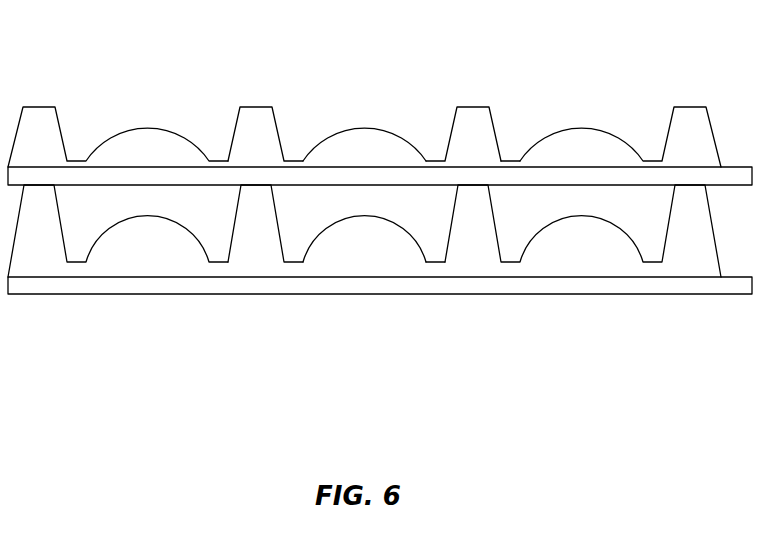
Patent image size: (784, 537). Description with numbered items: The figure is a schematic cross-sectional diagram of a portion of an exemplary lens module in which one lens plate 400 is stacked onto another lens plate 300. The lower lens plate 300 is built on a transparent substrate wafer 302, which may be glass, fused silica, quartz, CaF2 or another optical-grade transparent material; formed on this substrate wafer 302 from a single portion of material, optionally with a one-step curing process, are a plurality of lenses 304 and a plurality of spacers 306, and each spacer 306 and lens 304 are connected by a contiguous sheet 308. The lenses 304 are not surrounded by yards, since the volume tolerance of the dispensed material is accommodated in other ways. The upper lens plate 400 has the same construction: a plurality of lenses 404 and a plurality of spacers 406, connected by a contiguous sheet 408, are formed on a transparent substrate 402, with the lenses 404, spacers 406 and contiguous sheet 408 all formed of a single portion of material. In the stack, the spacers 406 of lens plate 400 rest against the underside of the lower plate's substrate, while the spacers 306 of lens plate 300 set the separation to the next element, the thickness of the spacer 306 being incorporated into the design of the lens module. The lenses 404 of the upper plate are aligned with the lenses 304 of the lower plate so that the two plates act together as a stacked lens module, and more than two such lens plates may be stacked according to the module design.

The lens plate 300 is at (380, 291).
The transparent substrate wafer 302 is at (610, 285).
The lens 304 is at (368, 254).
The spacer 306 is at (255, 245).
The contiguous sheet 308 is at (443, 280).
The lens plate 400 is at (383, 104).
The transparent substrate 402 is at (737, 177).
The lens 404 is at (365, 106).
The spacer 406 is at (263, 89).
The contiguous sheet 408 is at (518, 140).